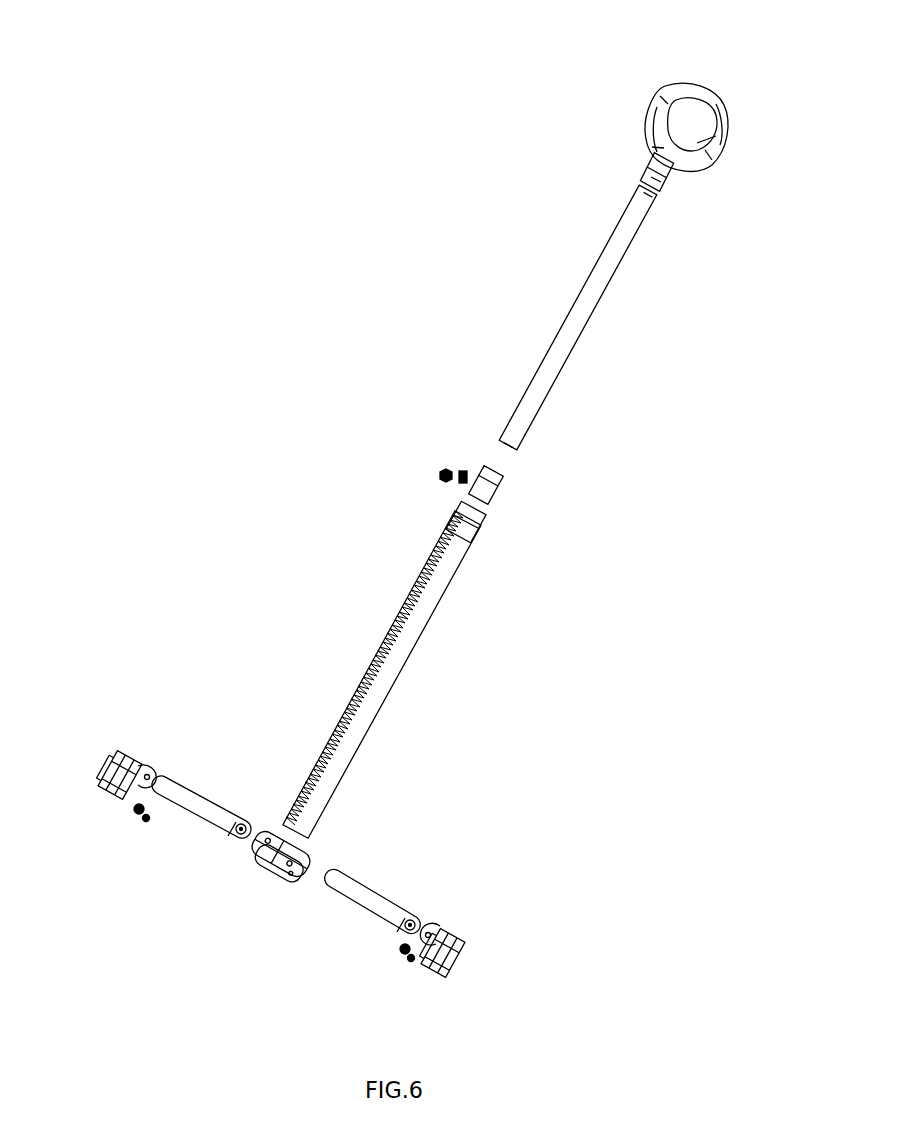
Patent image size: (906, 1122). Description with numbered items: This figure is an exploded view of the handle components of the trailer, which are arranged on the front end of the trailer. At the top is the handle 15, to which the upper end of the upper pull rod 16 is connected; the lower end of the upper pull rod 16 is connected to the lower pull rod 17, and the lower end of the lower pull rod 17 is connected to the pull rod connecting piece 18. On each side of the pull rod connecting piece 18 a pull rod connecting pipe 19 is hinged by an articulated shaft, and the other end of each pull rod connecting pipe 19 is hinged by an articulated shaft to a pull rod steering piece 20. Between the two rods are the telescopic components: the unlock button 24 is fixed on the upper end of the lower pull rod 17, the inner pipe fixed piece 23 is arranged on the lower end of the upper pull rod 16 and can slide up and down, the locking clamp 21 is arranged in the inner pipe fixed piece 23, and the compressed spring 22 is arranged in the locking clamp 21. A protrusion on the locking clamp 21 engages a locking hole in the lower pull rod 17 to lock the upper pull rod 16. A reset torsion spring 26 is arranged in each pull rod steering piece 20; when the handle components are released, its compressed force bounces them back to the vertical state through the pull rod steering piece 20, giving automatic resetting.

The handle 15 is at (658, 108).
The upper pull rod 16 is at (592, 278).
The lower pull rod 17 is at (383, 698).
The pull rod connecting piece 18 is at (273, 866).
The pull rod connecting pipes 19 is at (198, 805).
The pull rod steering pieces 20 is at (130, 770).
The locking clamp 21 is at (444, 468).
The compressed spring 22 is at (465, 474).
The inner pipe fixed piece 23 is at (507, 482).
The unlock button 24 is at (432, 530).
The reset torsion spring 26 is at (145, 823).